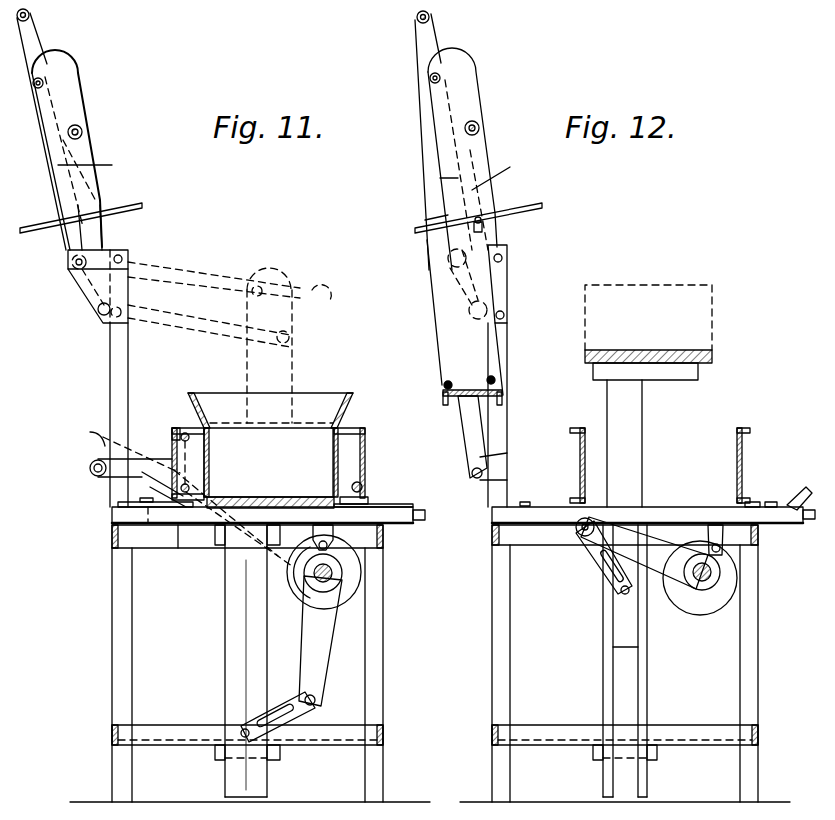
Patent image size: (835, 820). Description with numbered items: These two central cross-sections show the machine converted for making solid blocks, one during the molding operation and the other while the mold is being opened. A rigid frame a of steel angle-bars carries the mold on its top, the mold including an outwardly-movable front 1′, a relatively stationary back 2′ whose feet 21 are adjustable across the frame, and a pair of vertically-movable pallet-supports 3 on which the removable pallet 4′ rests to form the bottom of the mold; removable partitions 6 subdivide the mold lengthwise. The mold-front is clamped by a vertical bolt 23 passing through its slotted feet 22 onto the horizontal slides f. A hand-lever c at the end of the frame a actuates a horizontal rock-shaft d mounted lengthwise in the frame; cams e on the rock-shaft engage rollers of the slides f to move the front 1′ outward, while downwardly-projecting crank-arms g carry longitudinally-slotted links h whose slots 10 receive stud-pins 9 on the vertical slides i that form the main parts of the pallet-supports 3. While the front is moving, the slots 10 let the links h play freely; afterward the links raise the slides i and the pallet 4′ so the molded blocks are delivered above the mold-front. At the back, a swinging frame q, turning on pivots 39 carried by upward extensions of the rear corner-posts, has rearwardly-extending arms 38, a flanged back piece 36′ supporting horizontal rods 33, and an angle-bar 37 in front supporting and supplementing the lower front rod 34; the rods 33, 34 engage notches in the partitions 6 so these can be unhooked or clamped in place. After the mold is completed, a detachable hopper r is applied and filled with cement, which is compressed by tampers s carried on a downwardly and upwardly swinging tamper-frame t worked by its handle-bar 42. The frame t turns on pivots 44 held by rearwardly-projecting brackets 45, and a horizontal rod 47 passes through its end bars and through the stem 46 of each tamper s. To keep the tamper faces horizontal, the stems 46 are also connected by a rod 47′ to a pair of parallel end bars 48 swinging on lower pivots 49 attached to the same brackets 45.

In FIG. 11, the handle-bar 42 is at (30, 17).
In FIG. 12, the handle-bar 42 is at (430, 18).
In FIG. 11, the stem 46 is at (63, 87).
In FIG. 12, the stem 46 is at (465, 78).
In FIG. 11, the horizontal rod 47 is at (34, 87).
In FIG. 12, the horizontal rod 47 is at (430, 80).
In FIG. 11, the rod 47′ is at (82, 132).
In FIG. 12, the rod 47′ is at (479, 126).
In FIG. 11, the end bars 48 is at (92, 232).
In FIG. 12, the end bars 48 is at (498, 171).
In FIG. 11, the tamper-frame pivots 44 is at (72, 262).
In FIG. 12, the tamper-frame pivots 44 is at (448, 260).
In FIG. 11, the brackets 45 is at (85, 300).
In FIG. 11, the lower pivots 49 is at (100, 314).
In FIG. 12, the lower pivots 49 is at (470, 318).
In FIG. 12, the angle-bar 37 is at (482, 230).
In FIG. 11, the horizontal rods 33 is at (191, 462).
In FIG. 12, the horizontal rods 33 is at (452, 382).
In FIG. 11, the back piece 36′ is at (176, 428).
In FIG. 12, the back piece 36′ is at (456, 396).
In FIG. 11, the arms 38 is at (130, 485).
In FIG. 12, the arms 38 is at (468, 440).
In FIG. 11, the pivots 39 is at (90, 470).
In FIG. 12, the pivots 39 is at (472, 474).
In FIG. 11, the feet 21 is at (178, 525).
In FIG. 12, the feet 21 is at (525, 503).
In FIG. 11, the slotted feet 22 is at (405, 504).
In FIG. 12, the slotted feet 22 is at (752, 502).
In FIG. 11, the vertical bolt 23 is at (368, 500).
In FIG. 12, the vertical bolt 23 is at (771, 502).
In FIG. 11, the horizontal rod 34 is at (362, 484).
In FIG. 11, the stud-pins 9 is at (241, 731).
In FIG. 12, the stud-pins 9 is at (622, 593).
In FIG. 11, the slots 10 is at (278, 725).
In FIG. 12, the slots 10 is at (605, 562).
In FIG. 11, the pallet-supports 3 is at (225, 603).
In FIG. 12, the pallet-supports 3 is at (645, 580).
In FIG. 11, the pallet 4′ is at (300, 497).
In FIG. 12, the pallet 4′ is at (675, 350).
In FIG. 11, the back 2′ is at (218, 448).
In FIG. 12, the back 2′ is at (580, 460).
In FIG. 11, the front 1′ is at (365, 458).
In FIG. 12, the front 1′ is at (742, 460).
In FIG. 11, the partitions 6 is at (269, 462).
In FIG. 12, the partitions 6 is at (445, 310).
In FIG. 11, the tamper-frame t is at (93, 164).
In FIG. 12, the tamper-frame t is at (440, 178).
In FIG. 11, the tampers s is at (135, 203).
In FIG. 12, the tampers s is at (528, 203).
In FIG. 11, the swinging frame q is at (172, 428).
In FIG. 12, the swinging frame q is at (443, 393).
In FIG. 11, the hand-lever c is at (90, 432).
In FIG. 12, the hand-lever c is at (803, 488).
In FIG. 11, the frame a is at (112, 553).
In FIG. 12, the frame a is at (492, 563).
In FIG. 11, the vertical slides i is at (240, 663).
In FIG. 12, the vertical slides i is at (620, 638).
In FIG. 11, the slotted link h is at (285, 700).
In FIG. 12, the slotted link h is at (590, 545).
In FIG. 11, the crank-arms g is at (322, 650).
In FIG. 12, the crank-arms g is at (642, 553).
In FIG. 11, the cams e is at (298, 590).
In FIG. 12, the cams e is at (708, 606).
In FIG. 11, the rock-shaft d is at (342, 573).
In FIG. 12, the rock-shaft d is at (712, 576).
In FIG. 11, the horizontal slides f is at (333, 540).
In FIG. 12, the horizontal slides f is at (723, 552).
In FIG. 11, the hopper r is at (308, 395).